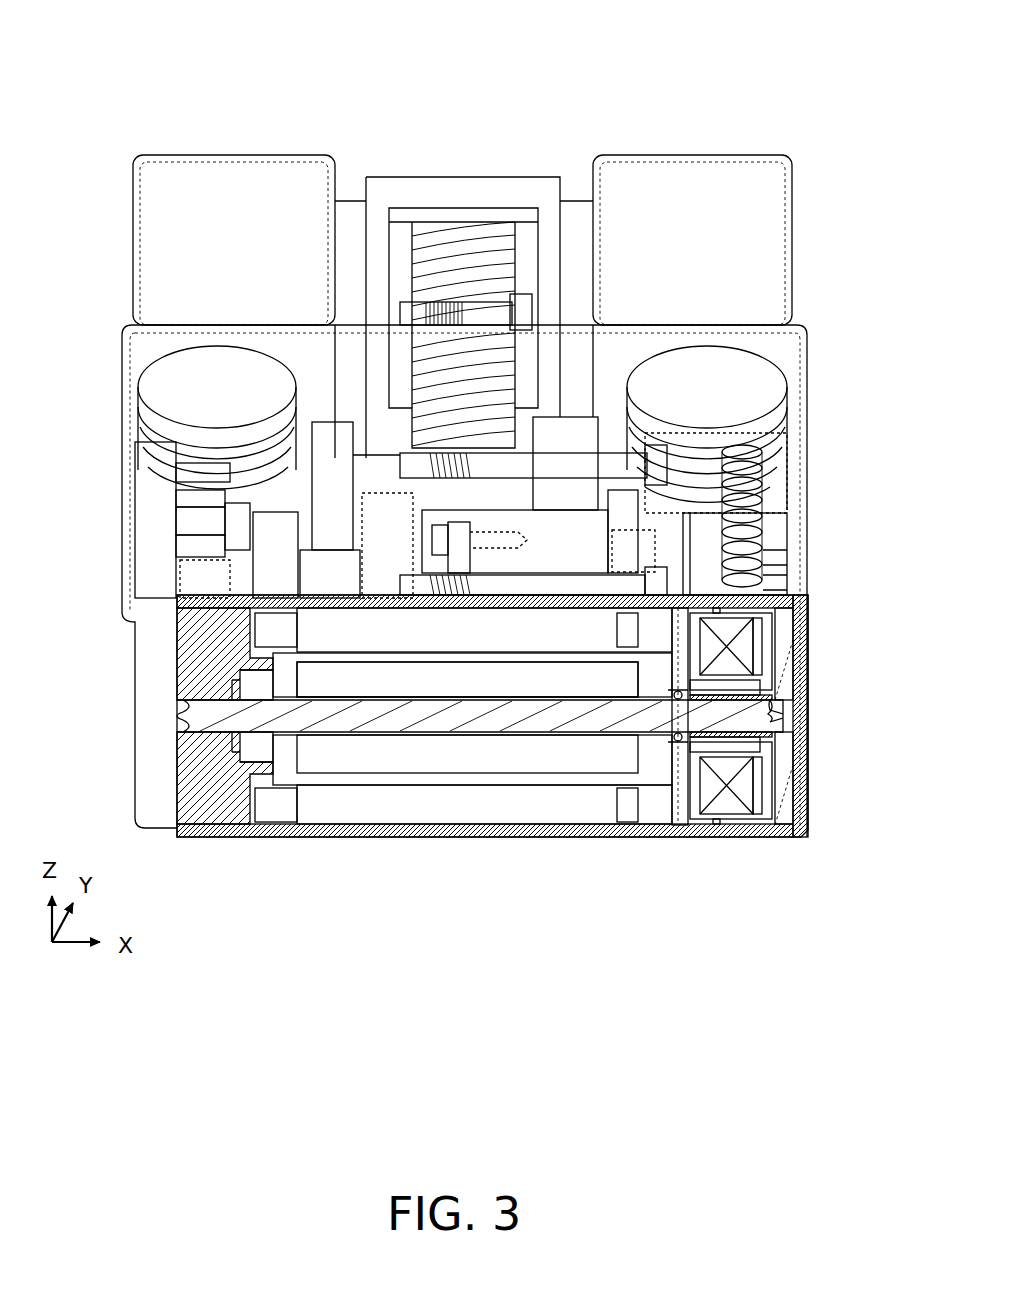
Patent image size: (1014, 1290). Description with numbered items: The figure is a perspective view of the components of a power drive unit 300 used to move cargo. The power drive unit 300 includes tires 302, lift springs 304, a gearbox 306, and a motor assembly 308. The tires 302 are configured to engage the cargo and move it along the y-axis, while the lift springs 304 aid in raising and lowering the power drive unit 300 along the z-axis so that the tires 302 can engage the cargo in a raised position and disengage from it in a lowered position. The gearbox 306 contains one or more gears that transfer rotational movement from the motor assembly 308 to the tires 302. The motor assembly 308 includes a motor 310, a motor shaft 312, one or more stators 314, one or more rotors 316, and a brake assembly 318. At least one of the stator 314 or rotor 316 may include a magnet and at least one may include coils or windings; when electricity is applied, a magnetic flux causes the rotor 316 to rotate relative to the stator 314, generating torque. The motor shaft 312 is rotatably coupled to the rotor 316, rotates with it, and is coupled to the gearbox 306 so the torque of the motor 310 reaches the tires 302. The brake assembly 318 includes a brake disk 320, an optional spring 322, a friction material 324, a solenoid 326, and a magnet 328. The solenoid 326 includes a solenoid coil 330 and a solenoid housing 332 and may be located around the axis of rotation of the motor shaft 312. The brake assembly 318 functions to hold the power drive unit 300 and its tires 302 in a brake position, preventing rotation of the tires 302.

The power drive unit 300 is at (90, 122).
The tires 302 is at (172, 175).
The lift springs 304 is at (160, 383).
The gearbox 306 is at (360, 487).
The motor assembly 308 is at (235, 630).
The motor 310 is at (300, 683).
The motor shaft 312 is at (772, 735).
The stators 314 is at (472, 719).
The rotors 316 is at (463, 716).
The brake assembly 318 is at (830, 622).
The brake disk 320 is at (790, 625).
The spring 322 is at (770, 700).
The friction material 324 is at (775, 652).
The solenoid 326 is at (778, 795).
The magnet 328 is at (718, 820).
The solenoid coil 330 is at (712, 822).
The solenoid housing 332 is at (765, 815).